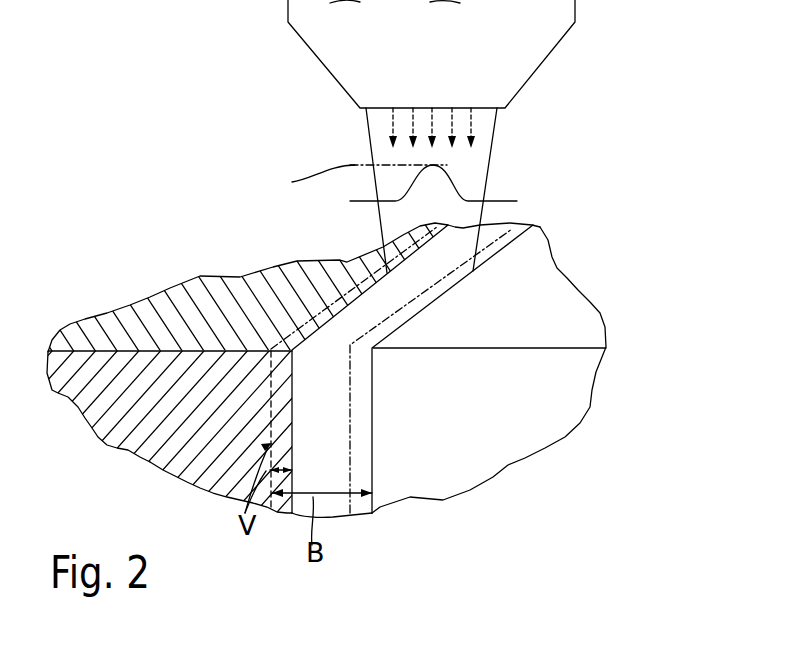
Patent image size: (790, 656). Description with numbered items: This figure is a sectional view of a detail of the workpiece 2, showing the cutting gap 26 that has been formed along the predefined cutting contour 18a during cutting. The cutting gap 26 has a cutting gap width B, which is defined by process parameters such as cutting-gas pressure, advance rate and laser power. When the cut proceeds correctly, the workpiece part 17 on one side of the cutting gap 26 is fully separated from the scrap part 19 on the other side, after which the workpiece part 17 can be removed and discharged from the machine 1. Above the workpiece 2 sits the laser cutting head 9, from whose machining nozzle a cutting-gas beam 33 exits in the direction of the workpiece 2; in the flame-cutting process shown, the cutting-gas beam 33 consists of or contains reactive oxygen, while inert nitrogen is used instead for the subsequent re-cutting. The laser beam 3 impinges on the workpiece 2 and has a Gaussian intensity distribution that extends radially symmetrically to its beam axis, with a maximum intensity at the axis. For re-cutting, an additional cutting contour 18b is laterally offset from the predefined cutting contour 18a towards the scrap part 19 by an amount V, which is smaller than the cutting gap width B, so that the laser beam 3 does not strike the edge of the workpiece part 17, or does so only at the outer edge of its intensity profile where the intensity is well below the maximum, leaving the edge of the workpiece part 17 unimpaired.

The machine 1 is at (447, 173).
The workpiece 2 is at (138, 251).
The laser beam 3 is at (368, 138).
The laser cutting head 9 is at (512, 40).
The workpiece part 17 is at (510, 423).
The predefined cutting contour 18a is at (376, 307).
The additional cutting contour 18b is at (242, 496).
The scrap part 19 is at (131, 450).
The cutting gap 26 is at (339, 507).
The cutting-gas beam 33 is at (473, 125).